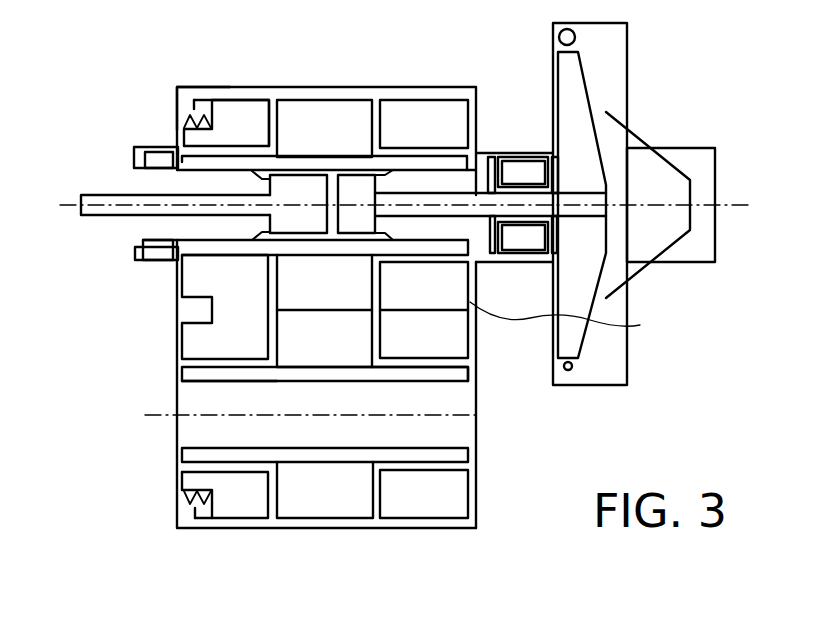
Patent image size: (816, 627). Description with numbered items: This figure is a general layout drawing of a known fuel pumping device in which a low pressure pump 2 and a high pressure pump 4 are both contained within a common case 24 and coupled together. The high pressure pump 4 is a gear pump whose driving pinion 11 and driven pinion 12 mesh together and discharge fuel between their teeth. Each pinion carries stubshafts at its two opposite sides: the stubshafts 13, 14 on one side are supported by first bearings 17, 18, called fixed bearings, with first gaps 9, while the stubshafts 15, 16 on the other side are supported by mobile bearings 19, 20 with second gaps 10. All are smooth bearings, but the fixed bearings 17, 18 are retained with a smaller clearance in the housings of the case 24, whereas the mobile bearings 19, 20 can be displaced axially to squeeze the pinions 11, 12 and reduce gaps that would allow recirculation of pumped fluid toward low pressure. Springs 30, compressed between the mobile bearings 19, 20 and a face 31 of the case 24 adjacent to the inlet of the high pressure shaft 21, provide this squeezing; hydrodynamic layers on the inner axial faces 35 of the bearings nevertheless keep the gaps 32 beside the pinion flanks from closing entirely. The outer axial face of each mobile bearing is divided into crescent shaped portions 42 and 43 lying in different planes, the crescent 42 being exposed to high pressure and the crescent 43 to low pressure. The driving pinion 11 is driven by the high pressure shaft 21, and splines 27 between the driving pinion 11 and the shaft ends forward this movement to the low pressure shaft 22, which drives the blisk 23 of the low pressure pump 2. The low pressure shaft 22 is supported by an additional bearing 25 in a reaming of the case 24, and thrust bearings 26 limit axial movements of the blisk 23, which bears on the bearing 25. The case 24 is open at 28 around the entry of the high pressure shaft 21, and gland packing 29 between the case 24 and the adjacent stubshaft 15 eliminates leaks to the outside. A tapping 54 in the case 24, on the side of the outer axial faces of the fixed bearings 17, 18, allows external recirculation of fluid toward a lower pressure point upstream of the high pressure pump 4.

The low pressure pump 2 is at (688, 148).
The high pressure pump 4 is at (103, 436).
The first gaps 9 is at (465, 362).
The second gaps 10 is at (203, 260).
The driving pinion 11 is at (355, 118).
The driven pinion 12 is at (323, 526).
The stubshaft 13 is at (437, 163).
The stubshaft 14 is at (476, 393).
The stubshaft 15 is at (180, 228).
The stubshaft 16 is at (197, 382).
The first bearing 17 is at (467, 297).
The first bearing 18 is at (467, 333).
The mobile bearing 19 is at (187, 137).
The mobile bearing 20 is at (238, 507).
The high pressure shaft 21 is at (110, 193).
The low pressure shaft 22 is at (487, 152).
The blisk 23 is at (593, 103).
The case 24 is at (477, 490).
The additional bearing 25 is at (542, 258).
The thrust bearings 26 is at (553, 152).
The splines 27 is at (253, 177).
The opening 28 is at (150, 242).
The gland packing 29 is at (137, 158).
The springs 30 is at (183, 120).
The face of the case 31 is at (183, 92).
The gaps 32 is at (377, 138).
The inner axial face 35 is at (270, 98).
The crescent shaped portion 42 is at (190, 350).
The crescent shaped portion 43 is at (192, 304).
The tapping 54 is at (569, 319).